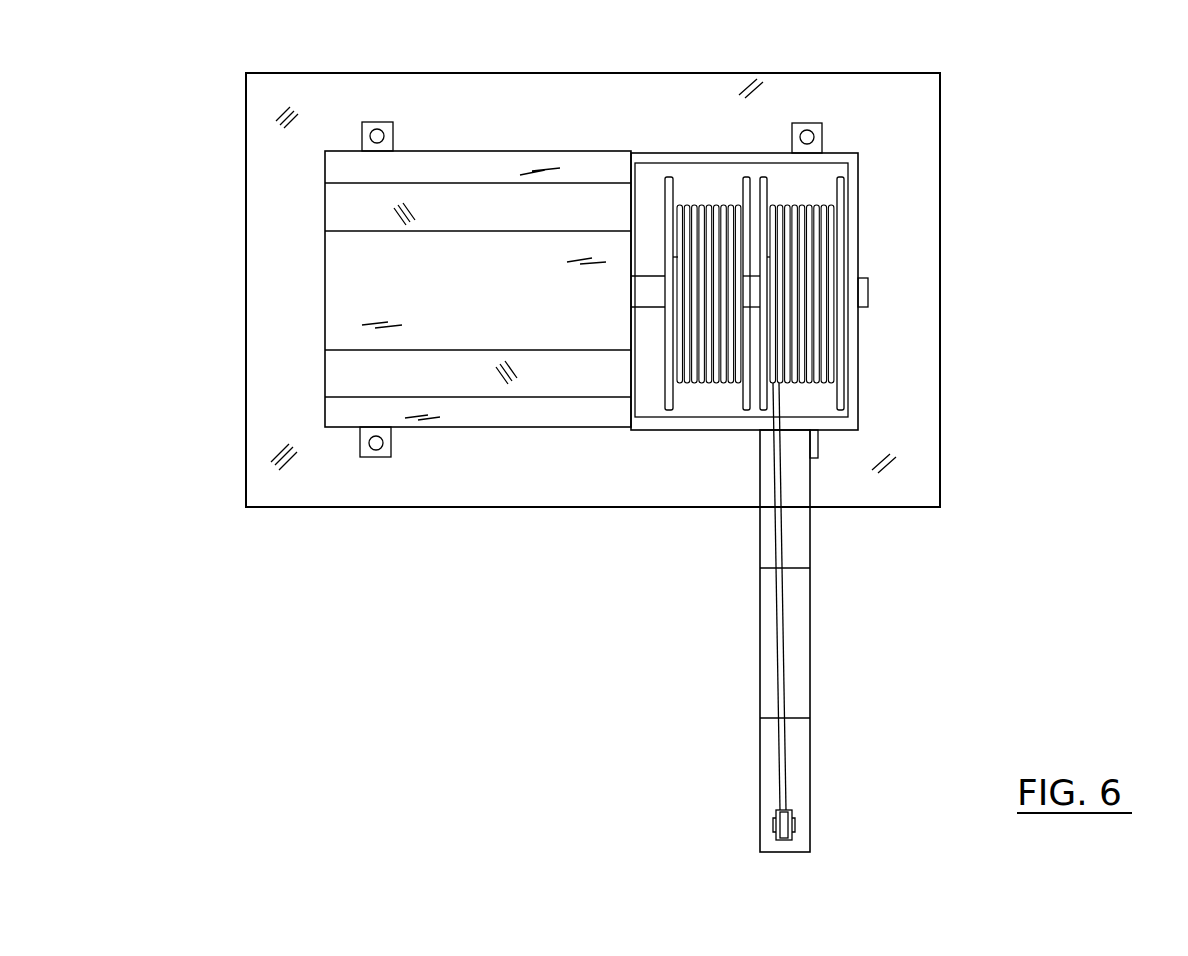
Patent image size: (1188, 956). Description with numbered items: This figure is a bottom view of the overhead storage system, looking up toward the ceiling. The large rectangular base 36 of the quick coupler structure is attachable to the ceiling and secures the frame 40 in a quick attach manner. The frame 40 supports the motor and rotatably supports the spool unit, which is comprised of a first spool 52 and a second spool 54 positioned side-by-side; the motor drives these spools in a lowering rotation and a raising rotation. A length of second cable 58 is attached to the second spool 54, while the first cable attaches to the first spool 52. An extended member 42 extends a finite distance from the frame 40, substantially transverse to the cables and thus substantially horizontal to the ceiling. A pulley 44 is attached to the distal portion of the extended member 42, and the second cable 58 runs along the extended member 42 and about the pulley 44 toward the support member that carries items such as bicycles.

The base 36 is at (910, 166).
The frame 40 is at (340, 284).
The extended member 42 is at (805, 620).
The pulley 44 is at (778, 838).
The first spool 52 is at (817, 233).
The second spool 54 is at (702, 210).
The second cable 58 is at (778, 666).